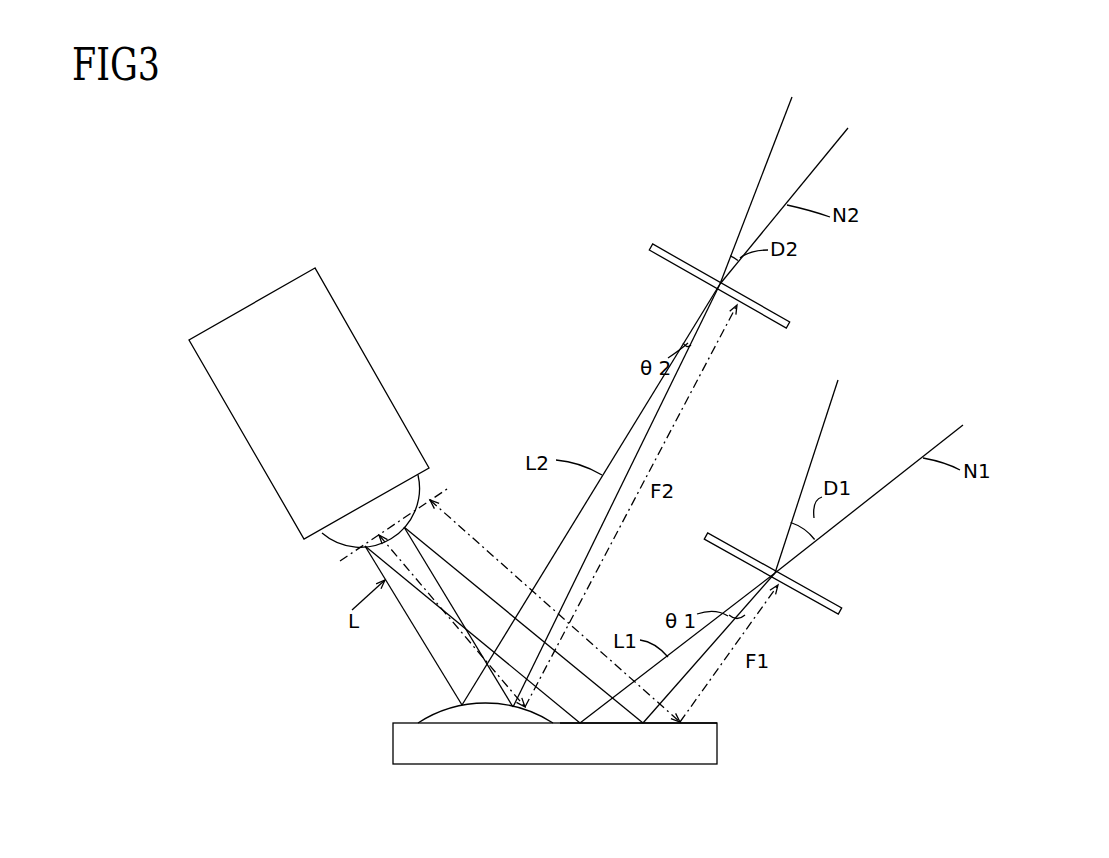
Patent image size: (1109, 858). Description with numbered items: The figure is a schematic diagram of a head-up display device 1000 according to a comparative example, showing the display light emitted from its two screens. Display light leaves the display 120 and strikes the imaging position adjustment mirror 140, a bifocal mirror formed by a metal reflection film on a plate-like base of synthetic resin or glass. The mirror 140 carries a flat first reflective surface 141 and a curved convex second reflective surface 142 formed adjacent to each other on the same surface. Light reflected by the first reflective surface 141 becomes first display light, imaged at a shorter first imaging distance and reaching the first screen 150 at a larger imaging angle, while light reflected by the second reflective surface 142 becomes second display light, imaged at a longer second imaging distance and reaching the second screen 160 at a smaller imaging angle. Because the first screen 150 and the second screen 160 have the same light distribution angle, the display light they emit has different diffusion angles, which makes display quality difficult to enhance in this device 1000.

The HUD device 1000 is at (297, 161).
The display 120 is at (383, 387).
The imaging position adjustment mirror 140 is at (598, 765).
The first reflective surface 141 is at (656, 709).
The second reflective surface 142 is at (433, 708).
The first screen 150 is at (843, 614).
The second screen 160 is at (776, 324).